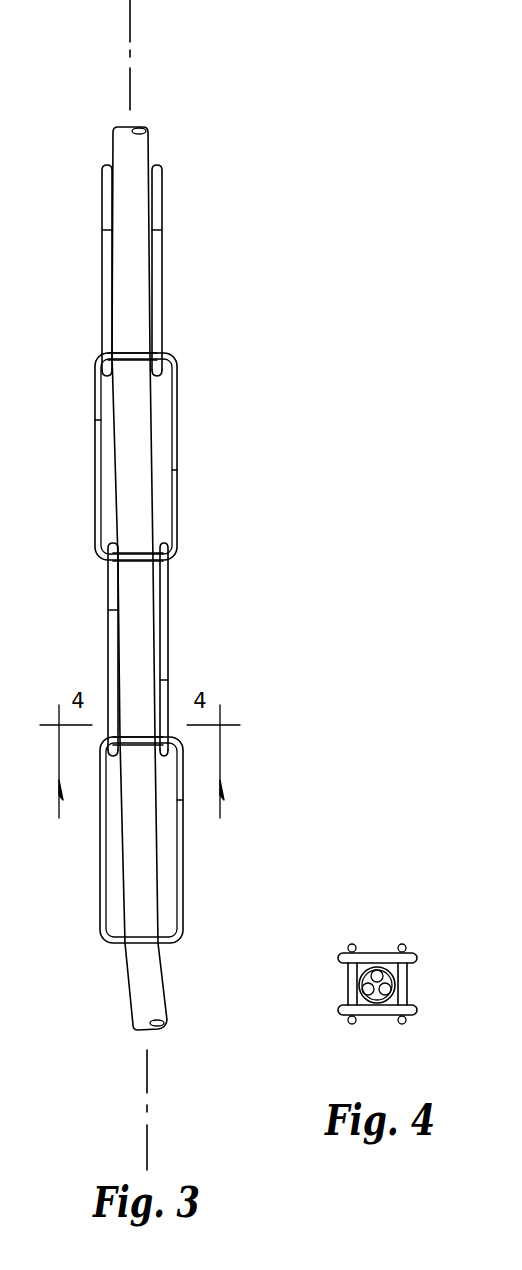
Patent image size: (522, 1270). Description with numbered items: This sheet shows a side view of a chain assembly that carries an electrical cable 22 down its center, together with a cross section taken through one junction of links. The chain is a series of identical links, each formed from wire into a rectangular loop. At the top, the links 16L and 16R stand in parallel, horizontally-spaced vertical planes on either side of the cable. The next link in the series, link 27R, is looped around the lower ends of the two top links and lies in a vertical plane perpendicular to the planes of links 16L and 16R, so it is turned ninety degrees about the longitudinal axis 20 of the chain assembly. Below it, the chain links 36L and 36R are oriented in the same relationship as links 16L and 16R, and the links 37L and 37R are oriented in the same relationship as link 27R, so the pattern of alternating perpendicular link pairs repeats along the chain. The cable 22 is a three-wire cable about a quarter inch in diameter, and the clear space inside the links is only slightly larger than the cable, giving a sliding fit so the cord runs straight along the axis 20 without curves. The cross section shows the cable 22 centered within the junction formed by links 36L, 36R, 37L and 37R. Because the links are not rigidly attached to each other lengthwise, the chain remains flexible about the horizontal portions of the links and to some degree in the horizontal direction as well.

In FIG. 3, the longitudinal axis 20 is at (142, 521).
In FIG. 3, the electrical cable 22 is at (153, 967).
In FIG. 4, the electrical cable 22 is at (377, 985).
In FIG. 3, the top link (left) 16L is at (103, 243).
In FIG. 3, the top link (right) 16R is at (160, 275).
In FIG. 3, the next adjacent link (right) 27R is at (178, 477).
In FIG. 3, the chain link (left) 36L is at (112, 648).
In FIG. 4, the chain link (left) 36L is at (348, 948).
In FIG. 3, the chain link (right) 36R is at (163, 662).
In FIG. 4, the chain link (right) 36R is at (407, 948).
In FIG. 4, the link (left) 37L is at (375, 952).
In FIG. 3, the link (right) 37R is at (107, 853).
In FIG. 4, the link (right) 37R is at (383, 1018).